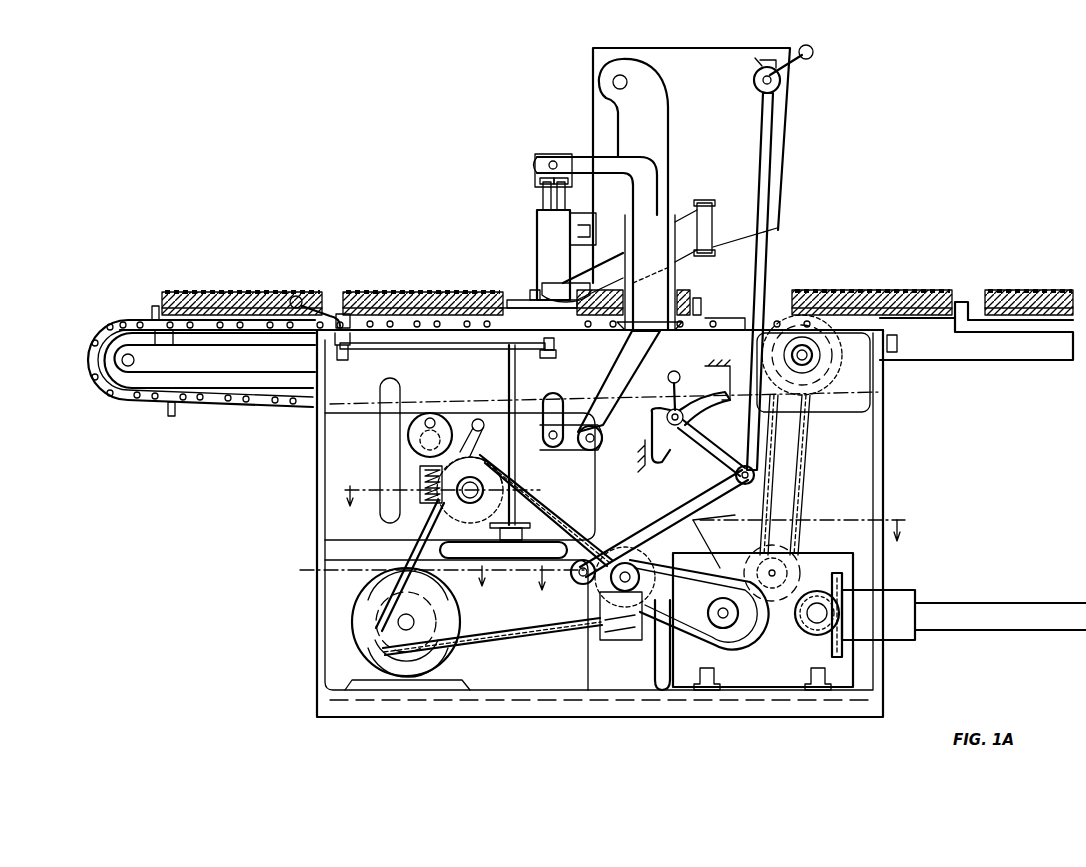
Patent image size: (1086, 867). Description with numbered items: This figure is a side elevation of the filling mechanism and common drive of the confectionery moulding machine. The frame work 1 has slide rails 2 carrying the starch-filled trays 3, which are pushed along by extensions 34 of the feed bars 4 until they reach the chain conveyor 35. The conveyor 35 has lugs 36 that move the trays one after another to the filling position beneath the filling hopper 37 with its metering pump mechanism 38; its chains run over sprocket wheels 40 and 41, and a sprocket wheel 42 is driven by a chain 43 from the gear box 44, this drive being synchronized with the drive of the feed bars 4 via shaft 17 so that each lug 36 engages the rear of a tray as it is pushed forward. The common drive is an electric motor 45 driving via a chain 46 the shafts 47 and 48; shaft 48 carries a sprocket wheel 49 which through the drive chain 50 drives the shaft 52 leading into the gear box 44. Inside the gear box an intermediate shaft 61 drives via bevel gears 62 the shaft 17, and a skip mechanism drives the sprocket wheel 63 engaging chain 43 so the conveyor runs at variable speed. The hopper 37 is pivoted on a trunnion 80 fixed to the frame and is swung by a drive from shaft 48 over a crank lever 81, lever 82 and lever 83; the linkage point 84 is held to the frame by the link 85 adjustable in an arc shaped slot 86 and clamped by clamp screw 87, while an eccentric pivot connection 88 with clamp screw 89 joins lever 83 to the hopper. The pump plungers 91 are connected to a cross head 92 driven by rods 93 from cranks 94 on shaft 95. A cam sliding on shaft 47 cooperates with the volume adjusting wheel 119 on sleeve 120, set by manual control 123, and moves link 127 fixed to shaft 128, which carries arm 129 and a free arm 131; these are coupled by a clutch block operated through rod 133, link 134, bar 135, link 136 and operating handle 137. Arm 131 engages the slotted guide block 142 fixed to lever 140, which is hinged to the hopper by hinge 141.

The frame work 1 is at (1060, 362).
The slide rails 2 is at (945, 320).
The trays 3 is at (925, 290).
The feed bars 4 is at (656, 463).
The shaft 17 is at (1025, 603).
The extensions 34 is at (962, 302).
The chain conveyor 35 is at (720, 318).
The lugs 36 is at (697, 298).
The filling hopper 37 is at (597, 92).
The metering pump mechanism 38 is at (537, 232).
The sprocket wheel 40 is at (160, 385).
The sprocket wheel 41 is at (825, 355).
The sprocket wheel 42 is at (815, 378).
The chain 43 is at (812, 460).
The gear box 44 is at (830, 553).
The electric motor 45 is at (446, 615).
The chain 46 is at (515, 636).
The shaft 47 is at (503, 551).
The shaft 48 is at (625, 593).
The sprocket wheel 49 is at (660, 560).
The drive chain 50 is at (662, 648).
The shaft 52 is at (738, 628).
The intermediate shaft 61 is at (798, 618).
The bevel gears 62 is at (832, 632).
The sprocket wheel 63 is at (774, 556).
The trunnion 80 is at (627, 86).
The crank lever 81 is at (578, 588).
The lever 82 is at (690, 503).
The lever 83 is at (755, 272).
The linkage point 84 is at (745, 484).
The link 85 is at (708, 445).
The arc shaped slot 86 is at (668, 455).
The clamp screw 87 is at (672, 405).
The eccentric pivot connection 88 is at (780, 78).
The clamp screw 89 is at (760, 58).
The plungers 91 is at (540, 196).
The cross head 92 is at (540, 157).
The rods 93 is at (625, 362).
The cranks 94 is at (590, 450).
The shaft 95 is at (552, 448).
The volume adjusting wheel 119 is at (484, 498).
The sleeve 120 is at (418, 520).
The manual control 123 is at (432, 423).
The link 127 is at (540, 526).
The shaft 128 is at (528, 378).
The arm 129 is at (515, 300).
The arm 131 is at (534, 290).
The rod 133 is at (570, 342).
The link 134 is at (572, 358).
The bar 135 is at (418, 343).
The link 136 is at (342, 362).
The operating handle 137 is at (338, 310).
The lever 140 is at (618, 277).
The hinge 141 is at (712, 205).
The guide block 142 is at (561, 298).